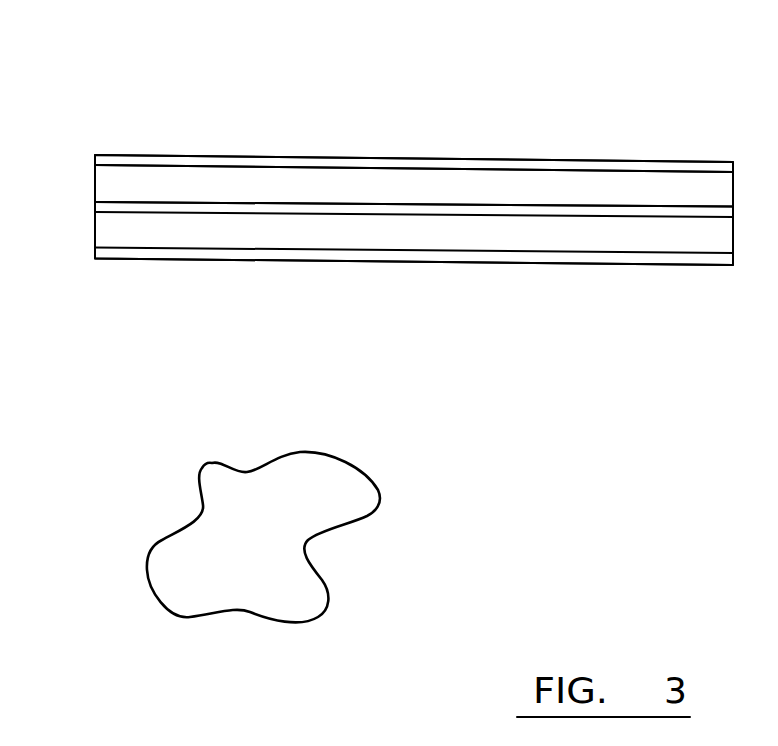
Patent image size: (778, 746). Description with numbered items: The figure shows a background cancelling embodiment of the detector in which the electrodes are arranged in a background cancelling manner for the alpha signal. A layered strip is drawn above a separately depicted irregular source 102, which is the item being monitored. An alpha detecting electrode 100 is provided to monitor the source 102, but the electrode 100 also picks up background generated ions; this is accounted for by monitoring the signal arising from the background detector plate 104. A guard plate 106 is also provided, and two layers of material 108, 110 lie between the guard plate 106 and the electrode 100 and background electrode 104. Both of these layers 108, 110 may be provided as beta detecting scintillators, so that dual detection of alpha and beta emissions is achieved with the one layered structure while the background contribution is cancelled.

The alpha detecting electrode 100 is at (568, 262).
The source 102 is at (307, 503).
The background detector plate 104 is at (458, 167).
The guard plate 106 is at (563, 213).
The layer of material 108 is at (207, 184).
The layer of material 110 is at (650, 235).